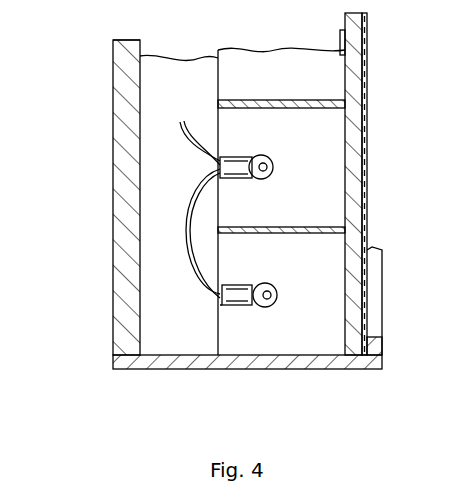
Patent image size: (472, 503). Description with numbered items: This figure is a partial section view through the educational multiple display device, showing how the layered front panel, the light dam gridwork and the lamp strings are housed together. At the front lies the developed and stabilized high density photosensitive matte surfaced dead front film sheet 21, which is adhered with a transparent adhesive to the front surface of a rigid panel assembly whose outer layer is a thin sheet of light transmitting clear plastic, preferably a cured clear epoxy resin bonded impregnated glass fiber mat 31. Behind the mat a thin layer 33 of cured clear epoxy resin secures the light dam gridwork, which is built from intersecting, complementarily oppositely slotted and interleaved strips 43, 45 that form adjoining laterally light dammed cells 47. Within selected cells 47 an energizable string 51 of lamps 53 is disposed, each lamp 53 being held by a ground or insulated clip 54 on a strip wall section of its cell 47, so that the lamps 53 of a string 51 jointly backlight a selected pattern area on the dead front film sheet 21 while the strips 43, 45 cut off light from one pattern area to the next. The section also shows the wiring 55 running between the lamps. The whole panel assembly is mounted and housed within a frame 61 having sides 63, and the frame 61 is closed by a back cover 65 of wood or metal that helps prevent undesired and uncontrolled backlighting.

The dead front film sheet 21 is at (364, 33).
The glass fiber mat 31 is at (368, 72).
The thin layer of cured clear epoxy resin 33 is at (340, 38).
The strip 43 is at (305, 87).
The strip 45 is at (276, 60).
The cell 47 is at (328, 158).
The string 51 is at (186, 208).
The lamp 53 is at (272, 170).
The clip 54 is at (221, 311).
The wire 55 is at (189, 262).
The frame 61 is at (384, 340).
The side 63 is at (174, 371).
The back cover 65 is at (114, 114).